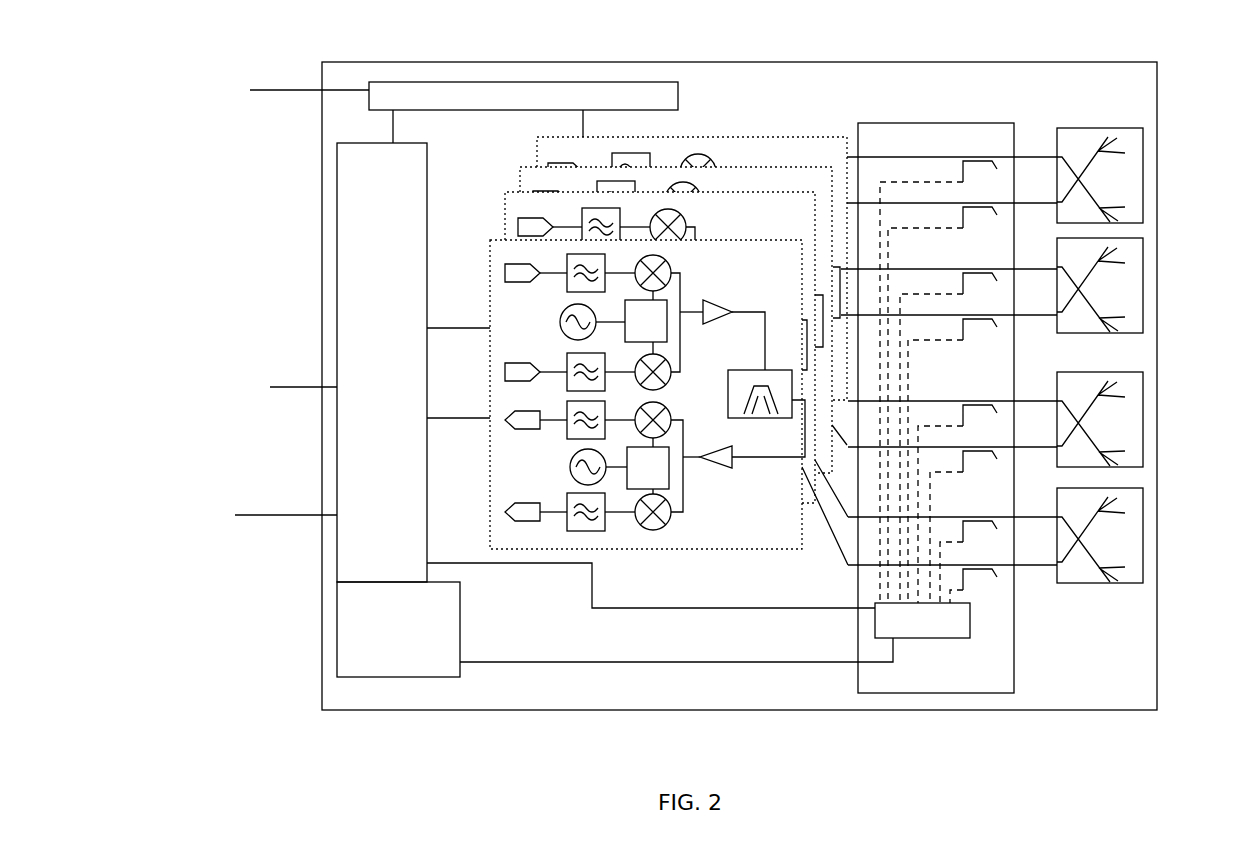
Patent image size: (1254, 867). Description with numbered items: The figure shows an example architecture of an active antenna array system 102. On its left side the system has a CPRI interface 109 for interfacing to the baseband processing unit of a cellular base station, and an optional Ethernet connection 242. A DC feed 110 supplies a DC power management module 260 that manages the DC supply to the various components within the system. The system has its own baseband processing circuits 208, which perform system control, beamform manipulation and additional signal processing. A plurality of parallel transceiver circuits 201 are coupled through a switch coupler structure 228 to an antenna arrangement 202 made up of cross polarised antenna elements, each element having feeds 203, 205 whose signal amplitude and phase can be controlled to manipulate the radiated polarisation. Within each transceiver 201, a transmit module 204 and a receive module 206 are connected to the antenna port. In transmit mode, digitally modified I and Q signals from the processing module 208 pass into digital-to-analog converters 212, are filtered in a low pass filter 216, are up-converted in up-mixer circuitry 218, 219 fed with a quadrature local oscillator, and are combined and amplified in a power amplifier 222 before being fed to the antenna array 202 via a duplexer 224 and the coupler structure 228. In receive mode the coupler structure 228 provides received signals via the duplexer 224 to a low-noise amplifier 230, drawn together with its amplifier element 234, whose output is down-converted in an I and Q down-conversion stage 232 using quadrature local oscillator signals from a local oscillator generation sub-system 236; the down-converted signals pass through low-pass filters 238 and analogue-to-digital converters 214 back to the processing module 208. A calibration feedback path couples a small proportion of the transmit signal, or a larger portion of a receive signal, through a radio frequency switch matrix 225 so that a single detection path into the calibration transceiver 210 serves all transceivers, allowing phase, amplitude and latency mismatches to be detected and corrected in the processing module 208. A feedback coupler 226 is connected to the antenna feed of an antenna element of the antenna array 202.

The active antenna array system 102 is at (170, 64).
The DC feed 110 is at (348, 90).
The DC power management module 260 is at (625, 83).
The baseband processing circuits 208 is at (343, 200).
The CPRI interface 109 is at (268, 387).
The optional Ethernet connection 242 is at (235, 520).
The calibration transceiver 210 is at (345, 657).
The transceiver circuit 201 is at (490, 543).
The transmit module 204 is at (510, 335).
The receive module 206 is at (496, 447).
The digital-to-analog converter 212 is at (505, 273).
The low pass filter 216 is at (565, 256).
The up-mixer circuitry 218 is at (668, 257).
The quadrature generation signal processing function 219 is at (656, 296).
The power amplifier 222 is at (728, 303).
The duplexer 224 is at (775, 418).
The down-conversion stage 232 is at (667, 406).
The low noise amplifier 234 is at (728, 452).
The low-noise amplifier 230 is at (713, 494).
The local oscillator generation sub-system 236 is at (570, 473).
The analogue-to-digital converter 214 is at (505, 512).
The low-pass filter 238 is at (598, 531).
The switch coupler structure 228 is at (1018, 652).
The radio frequency switch matrix 225 is at (942, 640).
The feedback coupler 226 is at (998, 575).
The feed 203 is at (1033, 157).
The feed 205 is at (1050, 203).
The antenna arrangement 202 is at (1143, 180).